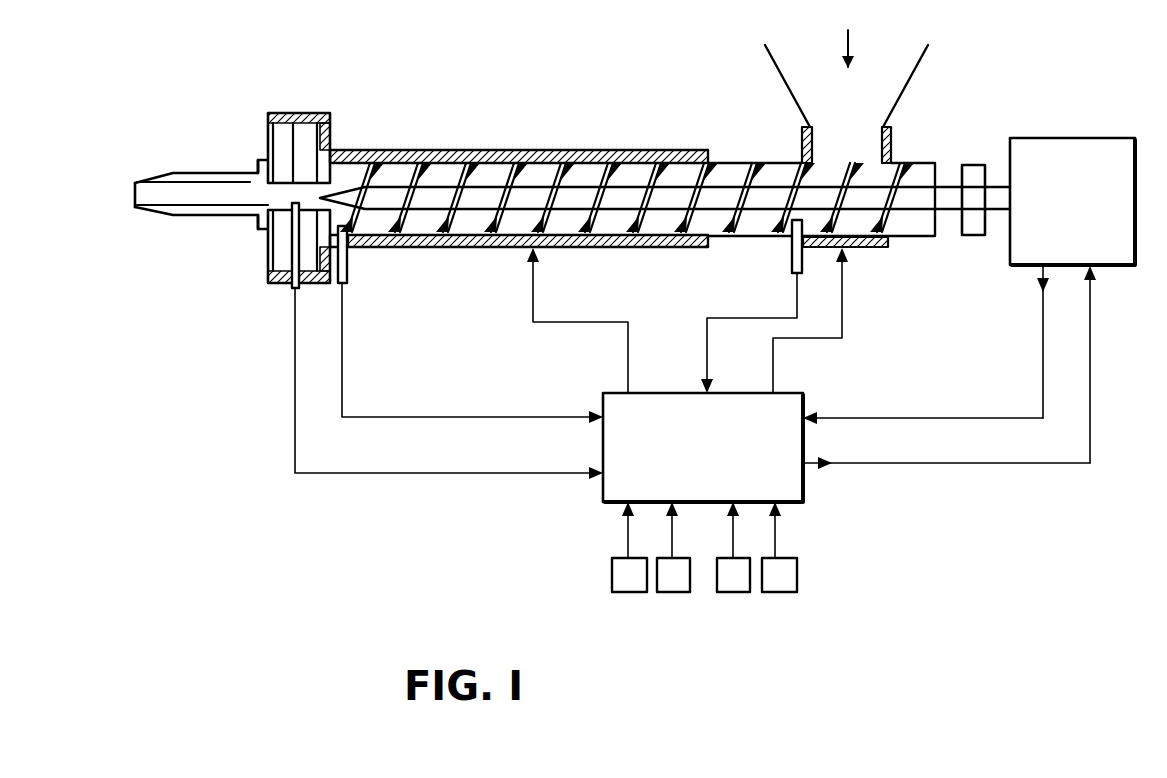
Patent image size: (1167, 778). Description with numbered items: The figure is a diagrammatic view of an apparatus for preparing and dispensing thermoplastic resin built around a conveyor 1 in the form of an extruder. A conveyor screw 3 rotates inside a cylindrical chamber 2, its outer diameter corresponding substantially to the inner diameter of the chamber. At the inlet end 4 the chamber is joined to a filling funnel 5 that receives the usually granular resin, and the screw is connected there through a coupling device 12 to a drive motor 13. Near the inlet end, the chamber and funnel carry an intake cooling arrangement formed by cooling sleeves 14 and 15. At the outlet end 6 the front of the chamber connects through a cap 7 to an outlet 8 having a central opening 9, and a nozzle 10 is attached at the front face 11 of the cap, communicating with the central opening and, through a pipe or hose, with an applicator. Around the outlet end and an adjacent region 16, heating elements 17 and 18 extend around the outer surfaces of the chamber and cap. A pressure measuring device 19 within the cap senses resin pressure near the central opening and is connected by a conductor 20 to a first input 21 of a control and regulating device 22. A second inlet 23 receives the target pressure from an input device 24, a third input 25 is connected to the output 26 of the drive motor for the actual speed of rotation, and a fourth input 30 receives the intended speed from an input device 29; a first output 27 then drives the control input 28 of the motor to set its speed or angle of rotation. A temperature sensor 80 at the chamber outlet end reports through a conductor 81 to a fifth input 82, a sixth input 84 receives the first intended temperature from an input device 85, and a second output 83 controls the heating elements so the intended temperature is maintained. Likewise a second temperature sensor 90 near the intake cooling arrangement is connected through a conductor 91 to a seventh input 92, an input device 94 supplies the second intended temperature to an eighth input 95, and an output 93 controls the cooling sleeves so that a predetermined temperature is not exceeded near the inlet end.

The conveyor 1 is at (594, 124).
The cylindrical chamber 2 is at (723, 163).
The conveyor screw 3 is at (755, 197).
The inlet end 4 is at (861, 258).
The filling funnel 5 is at (903, 90).
The outlet end 6 is at (366, 130).
The cap 7 is at (303, 130).
The outlet 8 is at (256, 143).
The central opening 9 is at (283, 193).
The nozzle 10 is at (226, 217).
The front face 11 is at (267, 259).
The coupling device 12 is at (977, 237).
The drive motor 13 is at (1038, 152).
The cooling sleeve 14 is at (888, 248).
The cooling sleeve 15 is at (892, 142).
The region adjacent the outlet end 16 is at (507, 136).
The heating element 17 is at (604, 248).
The heating element 18 is at (450, 157).
The pressure measuring device 19 is at (290, 290).
The conductor 20 is at (292, 447).
The first input 21 is at (598, 484).
The control and regulating device 22 is at (720, 458).
The second inlet 23 is at (625, 503).
The setpoint unit 24 is at (625, 582).
The third input 25 is at (790, 410).
The output 26 is at (1042, 253).
The first output 27 is at (790, 473).
The control input 28 is at (1097, 260).
The input device 29 is at (675, 582).
The fourth input 30 is at (675, 498).
The temperature sensor 80 is at (349, 268).
The conductor 81 is at (343, 388).
The fifth input 82 is at (597, 412).
The second output 83 is at (635, 392).
The sixth input 84 is at (738, 499).
The input device 85 is at (735, 582).
The second temperature sensor 90 is at (790, 252).
The conductor 91 is at (750, 316).
The seventh input 92 is at (712, 390).
The output 93 is at (780, 391).
The input device 94 is at (782, 583).
The eighth input 95 is at (782, 505).